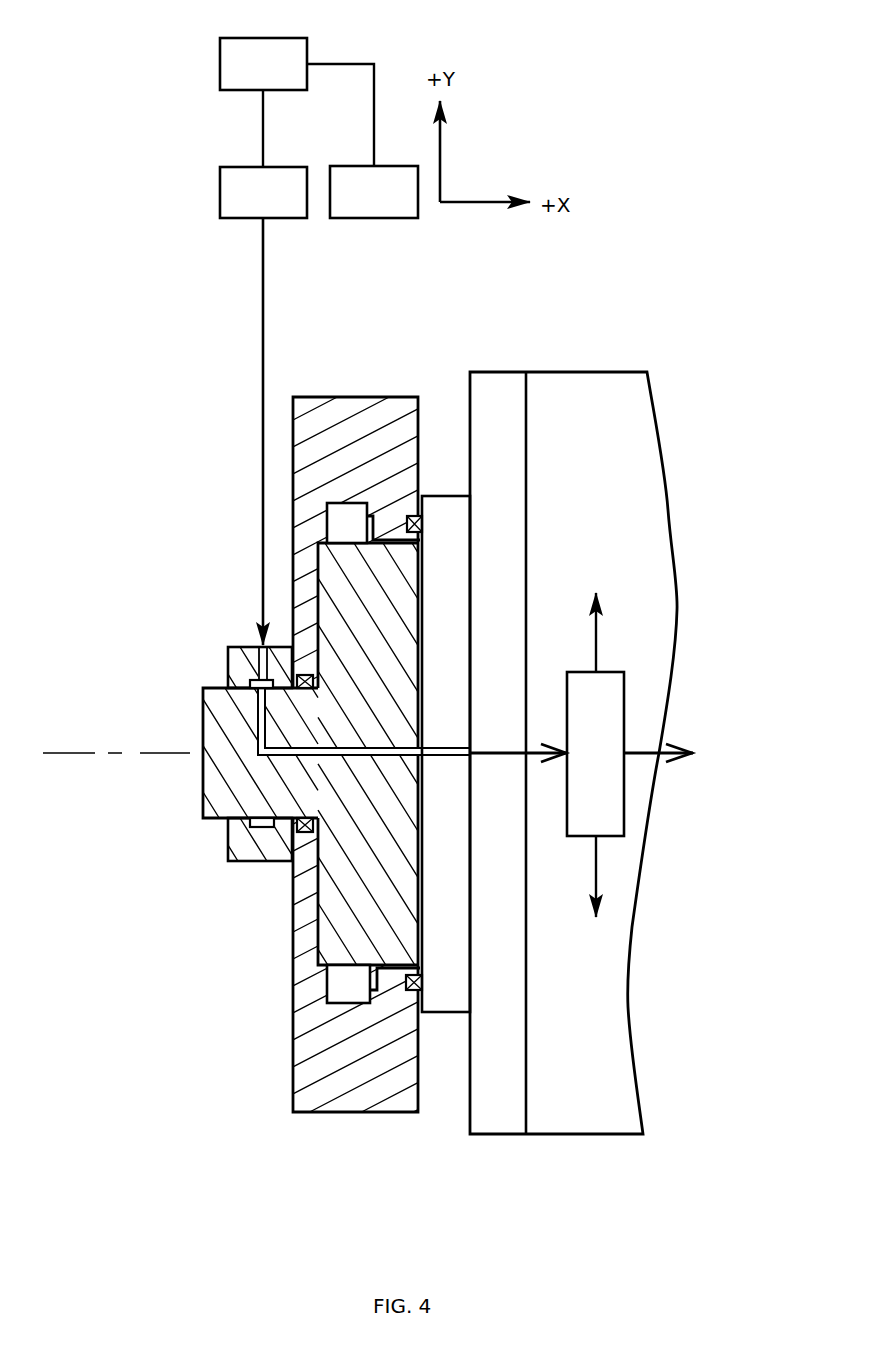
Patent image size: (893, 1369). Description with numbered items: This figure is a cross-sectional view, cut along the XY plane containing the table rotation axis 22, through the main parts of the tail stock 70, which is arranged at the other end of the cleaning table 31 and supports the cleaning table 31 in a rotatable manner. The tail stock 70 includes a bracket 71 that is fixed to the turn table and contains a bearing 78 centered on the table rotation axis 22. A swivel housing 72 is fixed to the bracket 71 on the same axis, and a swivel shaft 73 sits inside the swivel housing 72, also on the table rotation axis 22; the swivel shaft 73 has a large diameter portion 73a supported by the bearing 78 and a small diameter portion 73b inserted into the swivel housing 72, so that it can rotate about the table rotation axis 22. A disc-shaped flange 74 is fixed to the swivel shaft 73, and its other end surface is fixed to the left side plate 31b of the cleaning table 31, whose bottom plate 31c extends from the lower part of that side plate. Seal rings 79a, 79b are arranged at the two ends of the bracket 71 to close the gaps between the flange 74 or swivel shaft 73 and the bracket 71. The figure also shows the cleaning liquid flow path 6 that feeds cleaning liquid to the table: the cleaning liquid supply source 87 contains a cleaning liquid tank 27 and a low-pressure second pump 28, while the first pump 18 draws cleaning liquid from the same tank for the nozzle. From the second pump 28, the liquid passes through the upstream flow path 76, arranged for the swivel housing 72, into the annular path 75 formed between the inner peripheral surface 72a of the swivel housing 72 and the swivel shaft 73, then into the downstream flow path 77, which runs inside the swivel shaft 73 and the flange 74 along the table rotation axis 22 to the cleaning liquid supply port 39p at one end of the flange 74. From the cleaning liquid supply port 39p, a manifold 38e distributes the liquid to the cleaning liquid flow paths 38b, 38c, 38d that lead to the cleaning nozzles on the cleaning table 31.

The cleaning liquid supply source 87 is at (122, 22).
The cleaning liquid tank 27 is at (220, 56).
The second pump 28 is at (220, 192).
The first pump 18 is at (367, 218).
The tail stock 70 is at (280, 1120).
The bracket 71 is at (353, 1113).
The swivel housing 72 is at (254, 862).
The inner peripheral surface 72a is at (228, 830).
The swivel shaft 73 is at (320, 590).
The large diameter portion 73a is at (325, 520).
The small diameter portion 73b is at (240, 816).
The flange 74 is at (445, 1012).
The annular path 75 is at (250, 683).
The upstream flow path 76 is at (262, 588).
The downstream flow path 77 is at (258, 727).
The bearing 78 is at (347, 503).
The seal ring 79a is at (409, 515).
The seal ring 79b is at (304, 835).
The cleaning liquid flow path 6 is at (93, 603).
The table rotation axis 22 is at (73, 755).
The cleaning table 31 is at (614, 803).
The left side plate 31b is at (500, 1122).
The bottom plate 31c is at (633, 407).
The cleaning liquid flow path 38c is at (642, 752).
The cleaning liquid flow path 38d is at (597, 632).
The cleaning liquid flow path 38b is at (597, 875).
The manifold 38e is at (624, 797).
The cleaning liquid supply port 39p is at (472, 753).